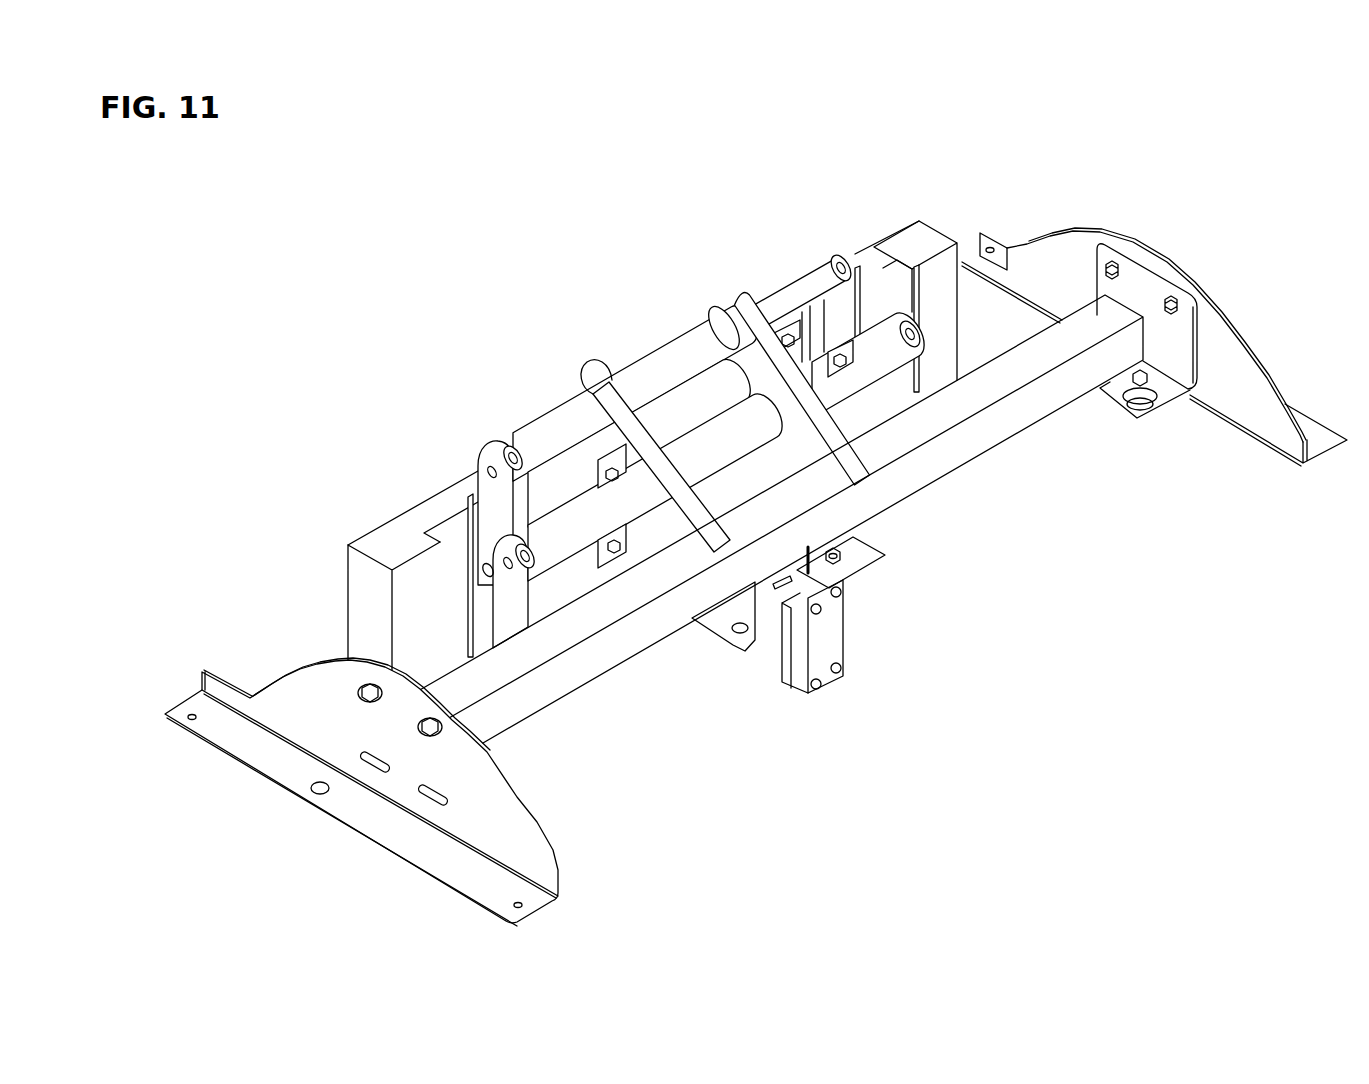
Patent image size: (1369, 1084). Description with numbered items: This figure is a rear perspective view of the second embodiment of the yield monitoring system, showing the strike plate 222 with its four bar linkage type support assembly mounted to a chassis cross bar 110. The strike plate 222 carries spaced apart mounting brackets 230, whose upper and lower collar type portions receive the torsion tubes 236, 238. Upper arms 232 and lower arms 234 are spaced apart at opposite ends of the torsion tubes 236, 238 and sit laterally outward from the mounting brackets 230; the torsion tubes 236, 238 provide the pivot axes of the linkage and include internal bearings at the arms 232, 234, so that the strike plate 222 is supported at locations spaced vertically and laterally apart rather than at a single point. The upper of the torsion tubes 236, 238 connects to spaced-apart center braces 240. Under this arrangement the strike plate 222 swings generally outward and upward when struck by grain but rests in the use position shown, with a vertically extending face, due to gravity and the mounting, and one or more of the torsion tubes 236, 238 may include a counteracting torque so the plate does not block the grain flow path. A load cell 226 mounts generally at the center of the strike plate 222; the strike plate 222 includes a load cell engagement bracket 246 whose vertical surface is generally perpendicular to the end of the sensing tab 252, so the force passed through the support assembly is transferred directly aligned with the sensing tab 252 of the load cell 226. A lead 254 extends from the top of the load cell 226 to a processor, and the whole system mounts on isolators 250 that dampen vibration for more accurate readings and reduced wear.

The chassis cross bar 110 is at (547, 697).
The strike plate 222 is at (357, 588).
The load cell 226 is at (831, 637).
The mounting brackets 230 is at (472, 540).
The upper arms 232 is at (488, 478).
The lower arms 234 is at (908, 380).
The torsion tube 236 is at (877, 343).
The torsion tube 238 is at (528, 438).
The center braces 240 is at (640, 440).
The load cell engagement bracket 246 is at (741, 647).
The isolators 250 is at (410, 270).
The sensing tab 252 is at (777, 633).
The lead 254 is at (842, 556).